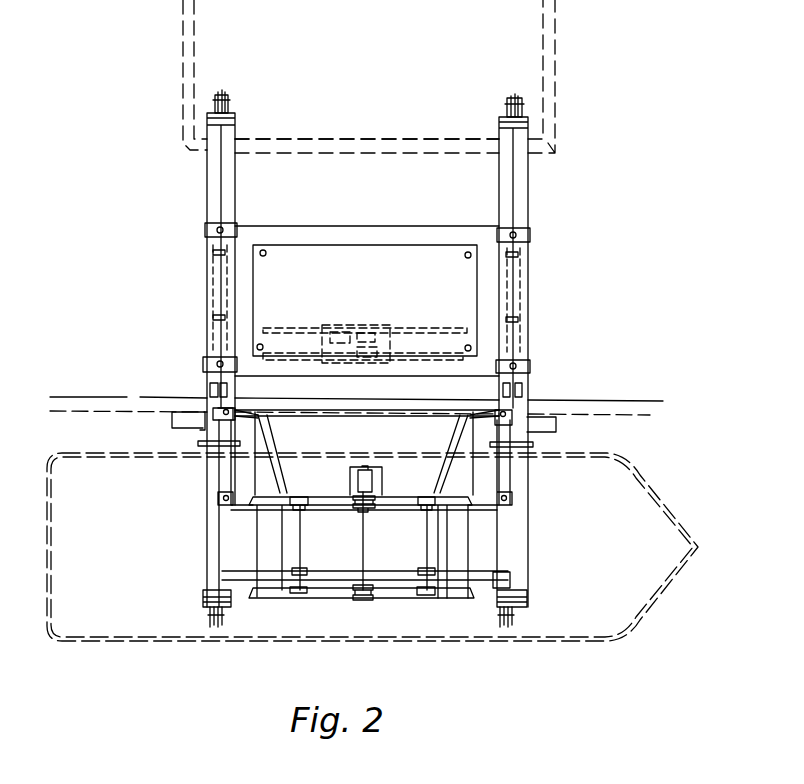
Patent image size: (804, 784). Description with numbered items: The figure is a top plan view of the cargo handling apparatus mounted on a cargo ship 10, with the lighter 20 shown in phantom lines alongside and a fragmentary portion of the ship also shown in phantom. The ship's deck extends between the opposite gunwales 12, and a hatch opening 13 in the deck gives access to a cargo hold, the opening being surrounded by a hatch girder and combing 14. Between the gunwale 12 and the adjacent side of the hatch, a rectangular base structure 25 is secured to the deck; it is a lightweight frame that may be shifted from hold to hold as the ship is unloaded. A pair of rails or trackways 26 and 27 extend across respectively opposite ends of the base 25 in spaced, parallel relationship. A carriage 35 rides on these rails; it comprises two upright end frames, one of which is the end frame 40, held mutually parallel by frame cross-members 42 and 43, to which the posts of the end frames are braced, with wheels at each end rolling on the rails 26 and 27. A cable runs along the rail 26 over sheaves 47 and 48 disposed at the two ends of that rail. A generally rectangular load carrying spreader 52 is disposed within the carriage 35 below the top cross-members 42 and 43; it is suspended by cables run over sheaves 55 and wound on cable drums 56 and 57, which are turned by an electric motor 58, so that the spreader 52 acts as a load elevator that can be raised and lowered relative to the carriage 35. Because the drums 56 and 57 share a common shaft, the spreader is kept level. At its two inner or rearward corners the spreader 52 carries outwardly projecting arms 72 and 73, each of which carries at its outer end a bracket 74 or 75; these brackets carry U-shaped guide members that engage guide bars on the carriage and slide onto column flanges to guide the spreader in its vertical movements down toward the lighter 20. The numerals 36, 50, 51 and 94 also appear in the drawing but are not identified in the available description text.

The cargo ship 10 is at (78, 411).
The gunwales 12 is at (92, 397).
The hatch opening 13 is at (258, 22).
The hatch girder and combing 14 is at (275, 139).
The lighter 20 is at (47, 508).
The rectangular base structure 25 is at (268, 226).
The rail or trackway 26 is at (207, 192).
The rail or trackway 27 is at (499, 192).
The carriage 35 is at (514, 507).
The control panel 36 is at (378, 247).
The end frame 40 is at (219, 522).
The frame cross-member 42 is at (390, 497).
The frame cross-member 43 is at (510, 535).
The sheave 47 is at (223, 108).
The sheave 48 is at (223, 620).
The left hydraulic cylinder 50 is at (213, 287).
The right hydraulic cylinder 51 is at (518, 282).
The load carrying spreader 52 is at (340, 600).
The sheaves 55 is at (305, 496).
The cable drum 56 is at (360, 512).
The cable drum 57 is at (370, 601).
The electric motor 58 is at (356, 478).
The arm 72 is at (270, 444).
The arm 73 is at (460, 447).
The bracket 74 is at (247, 410).
The bracket 75 is at (487, 410).
The support arm 94 is at (200, 442).